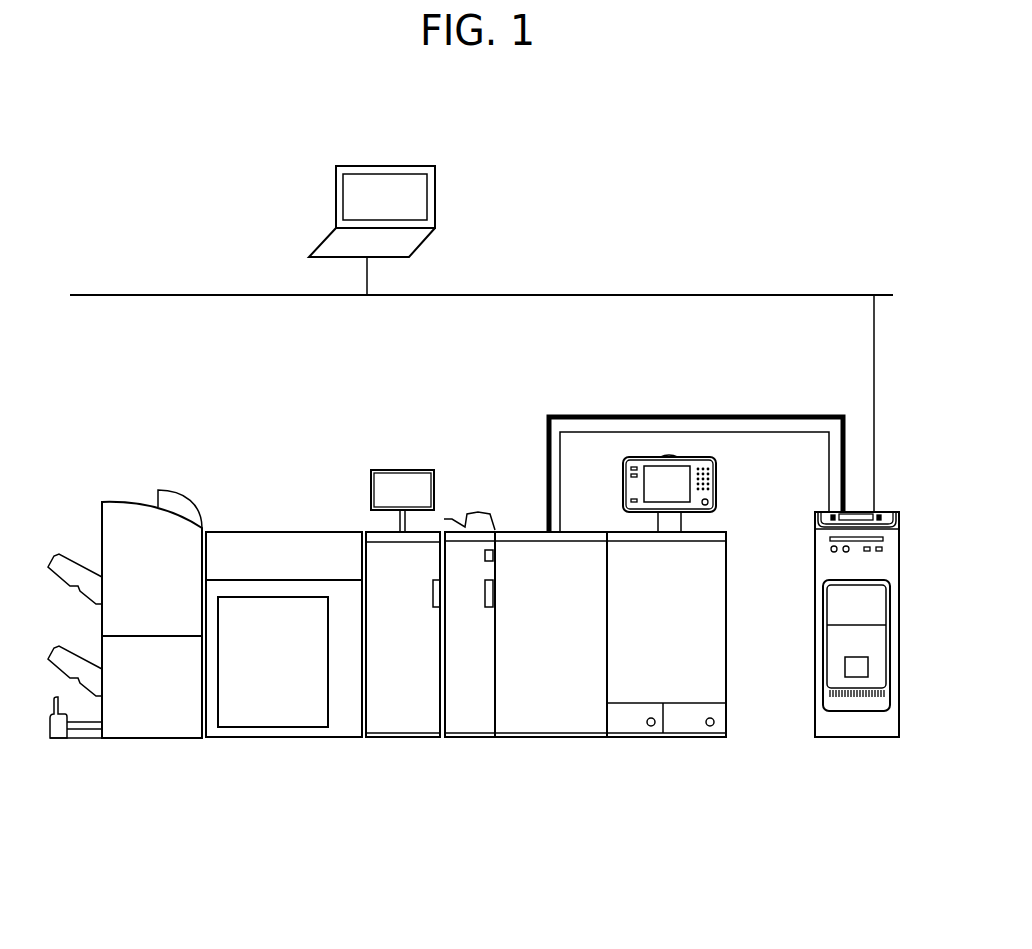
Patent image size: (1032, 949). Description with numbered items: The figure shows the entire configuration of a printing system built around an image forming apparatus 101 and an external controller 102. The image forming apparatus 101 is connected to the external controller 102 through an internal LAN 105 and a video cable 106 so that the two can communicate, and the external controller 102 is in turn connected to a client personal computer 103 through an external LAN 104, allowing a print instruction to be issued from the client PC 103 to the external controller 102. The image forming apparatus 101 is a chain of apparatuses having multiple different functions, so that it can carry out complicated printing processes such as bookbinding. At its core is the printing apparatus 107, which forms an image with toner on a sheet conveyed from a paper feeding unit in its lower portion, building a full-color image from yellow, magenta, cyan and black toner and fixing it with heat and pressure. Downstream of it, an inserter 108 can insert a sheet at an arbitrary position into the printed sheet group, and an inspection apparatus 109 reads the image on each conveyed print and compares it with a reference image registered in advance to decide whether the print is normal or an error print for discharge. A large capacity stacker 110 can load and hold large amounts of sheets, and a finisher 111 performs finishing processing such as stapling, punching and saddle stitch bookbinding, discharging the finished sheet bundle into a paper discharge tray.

The image forming apparatus 101 is at (725, 822).
The external controller 102 is at (853, 738).
The client personal computer 103 is at (336, 208).
The external LAN 104 is at (778, 295).
The internal LAN 105 is at (755, 433).
The video cable 106 is at (752, 416).
The printing apparatus 107 is at (674, 738).
The inserter 108 is at (470, 738).
The inspection apparatus 109 is at (404, 738).
The large capacity stacker 110 is at (282, 738).
The finisher 111 is at (152, 738).